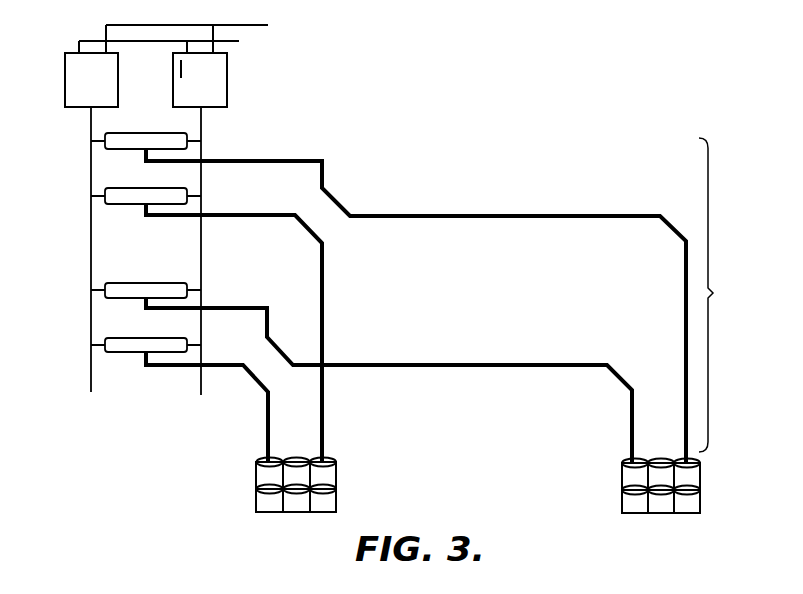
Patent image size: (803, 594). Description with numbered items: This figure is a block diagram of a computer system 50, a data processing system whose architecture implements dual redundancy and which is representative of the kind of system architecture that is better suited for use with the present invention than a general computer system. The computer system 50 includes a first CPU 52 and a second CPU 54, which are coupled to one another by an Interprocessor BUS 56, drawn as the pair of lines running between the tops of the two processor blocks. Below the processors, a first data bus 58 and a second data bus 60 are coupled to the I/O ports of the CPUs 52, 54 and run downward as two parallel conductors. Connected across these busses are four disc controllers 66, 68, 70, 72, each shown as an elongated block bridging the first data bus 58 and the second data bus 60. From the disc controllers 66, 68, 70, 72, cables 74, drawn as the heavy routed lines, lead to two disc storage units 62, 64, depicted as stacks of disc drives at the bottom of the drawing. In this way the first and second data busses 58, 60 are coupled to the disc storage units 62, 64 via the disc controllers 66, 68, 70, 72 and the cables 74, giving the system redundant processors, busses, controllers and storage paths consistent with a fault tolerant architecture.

The computer system 50 is at (507, 113).
The first CPU 52 is at (64, 86).
The second CPU 54 is at (228, 79).
The Interprocessor BUS (IPB) 56 is at (272, 15).
The first data bus 58 is at (82, 160).
The second data bus 60 is at (210, 140).
The disc storage unit 62 is at (338, 478).
The disc storage unit 64 is at (702, 478).
The disc controller 66 is at (118, 130).
The disc controller 68 is at (143, 186).
The disc controller 70 is at (152, 282).
The disc controller 72 is at (152, 338).
The cables 74 is at (722, 295).